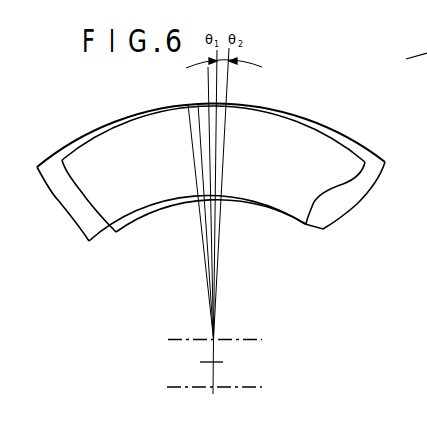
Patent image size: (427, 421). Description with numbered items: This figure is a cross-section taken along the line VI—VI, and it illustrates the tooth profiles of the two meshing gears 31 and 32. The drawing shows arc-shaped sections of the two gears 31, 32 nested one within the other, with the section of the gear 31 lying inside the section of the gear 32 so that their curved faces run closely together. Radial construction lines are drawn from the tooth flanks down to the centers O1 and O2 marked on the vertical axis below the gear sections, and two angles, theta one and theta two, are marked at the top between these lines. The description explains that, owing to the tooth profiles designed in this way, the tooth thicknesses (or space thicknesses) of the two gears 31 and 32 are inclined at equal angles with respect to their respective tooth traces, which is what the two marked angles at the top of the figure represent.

The gear 31 is at (316, 157).
The gear 32 is at (333, 197).
The first arc center O1 is at (215, 322).
The second arc center O2 is at (214, 372).
The section line VI is at (399, 58).